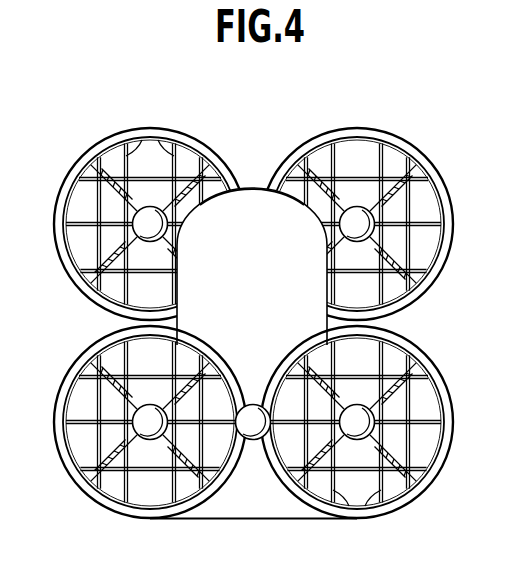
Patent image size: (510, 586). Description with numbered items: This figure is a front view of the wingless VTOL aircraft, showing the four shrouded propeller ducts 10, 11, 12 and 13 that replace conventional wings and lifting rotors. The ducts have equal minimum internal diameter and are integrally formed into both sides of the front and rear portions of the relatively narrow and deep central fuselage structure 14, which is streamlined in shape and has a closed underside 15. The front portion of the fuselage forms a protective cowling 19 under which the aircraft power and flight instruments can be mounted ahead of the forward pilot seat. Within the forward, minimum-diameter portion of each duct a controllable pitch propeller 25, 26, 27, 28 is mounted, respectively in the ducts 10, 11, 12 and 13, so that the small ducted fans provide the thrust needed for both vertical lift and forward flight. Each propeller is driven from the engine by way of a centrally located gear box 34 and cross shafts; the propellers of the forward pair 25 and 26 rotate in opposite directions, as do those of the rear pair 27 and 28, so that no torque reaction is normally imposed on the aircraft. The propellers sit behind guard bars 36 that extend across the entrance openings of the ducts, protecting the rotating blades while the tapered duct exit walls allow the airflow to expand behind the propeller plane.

The shrouded propeller duct 10 is at (66, 462).
The shrouded propeller duct 11 is at (441, 468).
The shrouded propeller duct 12 is at (64, 187).
The shrouded propeller duct 13 is at (414, 148).
The central fuselage structure 14 is at (256, 310).
The closed underside 15 is at (251, 508).
The protective cowling 19 is at (266, 192).
The controllable pitch propeller 25 is at (152, 405).
The controllable pitch propeller 26 is at (361, 405).
The controllable pitch propeller 27 is at (168, 226).
The controllable pitch propeller 28 is at (340, 228).
The centrally located gear box 34 is at (254, 440).
The guard bars 36 is at (154, 135).